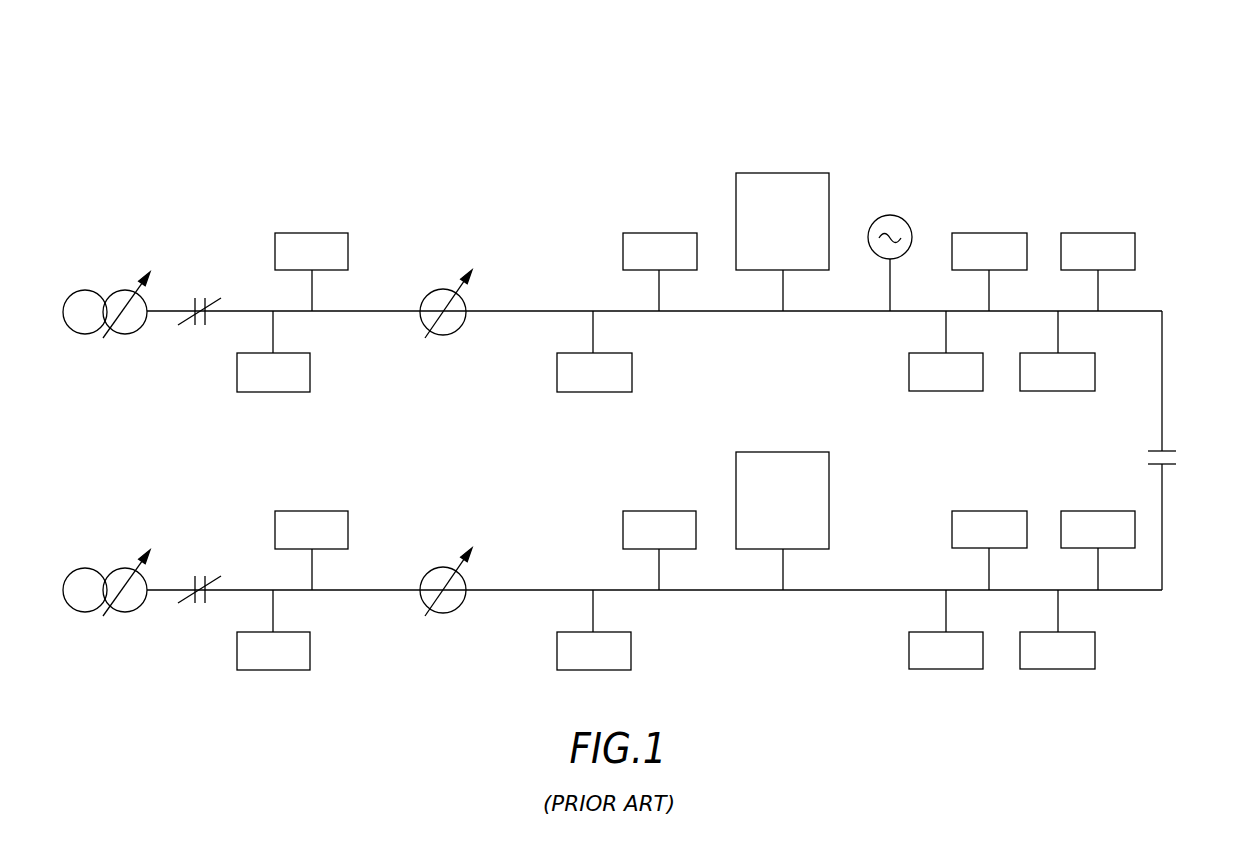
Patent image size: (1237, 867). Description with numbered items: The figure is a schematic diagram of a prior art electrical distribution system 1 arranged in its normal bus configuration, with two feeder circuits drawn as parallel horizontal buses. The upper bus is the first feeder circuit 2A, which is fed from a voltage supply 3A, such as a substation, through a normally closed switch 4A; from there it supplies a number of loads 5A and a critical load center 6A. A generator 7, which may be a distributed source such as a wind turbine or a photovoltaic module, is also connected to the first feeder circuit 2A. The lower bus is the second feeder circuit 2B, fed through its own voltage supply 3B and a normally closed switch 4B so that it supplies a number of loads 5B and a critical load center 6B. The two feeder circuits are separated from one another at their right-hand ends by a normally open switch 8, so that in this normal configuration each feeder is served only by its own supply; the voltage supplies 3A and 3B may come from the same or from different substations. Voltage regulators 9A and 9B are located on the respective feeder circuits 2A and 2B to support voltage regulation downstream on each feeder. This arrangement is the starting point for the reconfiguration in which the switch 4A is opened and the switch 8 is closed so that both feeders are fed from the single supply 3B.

The electrical distribution system 1 is at (577, 114).
The first feeder circuit 2A is at (365, 309).
The second feeder circuit 2B is at (365, 588).
The voltage supply 3A is at (99, 290).
The voltage supply 3B is at (99, 568).
The normally closed switch 4A is at (195, 297).
The normally closed switch 4B is at (196, 575).
The loads 5A is at (310, 233).
The loads 5B is at (336, 511).
The critical load center 6A is at (830, 178).
The critical load center 6B is at (830, 457).
The generator 7 is at (892, 215).
The normally open switch 8 is at (1176, 458).
The voltage regulator 9A is at (440, 289).
The voltage regulator 9B is at (440, 567).